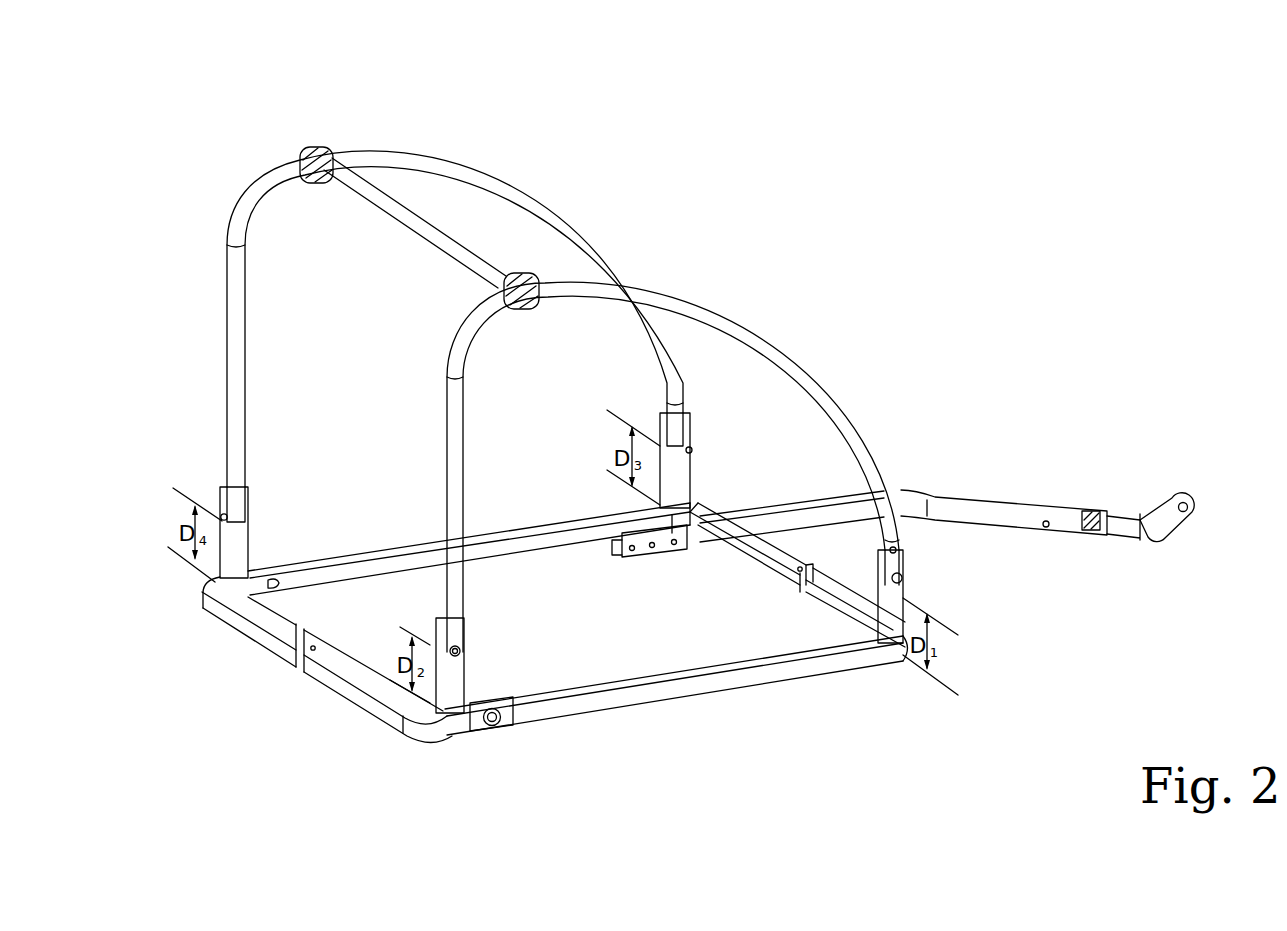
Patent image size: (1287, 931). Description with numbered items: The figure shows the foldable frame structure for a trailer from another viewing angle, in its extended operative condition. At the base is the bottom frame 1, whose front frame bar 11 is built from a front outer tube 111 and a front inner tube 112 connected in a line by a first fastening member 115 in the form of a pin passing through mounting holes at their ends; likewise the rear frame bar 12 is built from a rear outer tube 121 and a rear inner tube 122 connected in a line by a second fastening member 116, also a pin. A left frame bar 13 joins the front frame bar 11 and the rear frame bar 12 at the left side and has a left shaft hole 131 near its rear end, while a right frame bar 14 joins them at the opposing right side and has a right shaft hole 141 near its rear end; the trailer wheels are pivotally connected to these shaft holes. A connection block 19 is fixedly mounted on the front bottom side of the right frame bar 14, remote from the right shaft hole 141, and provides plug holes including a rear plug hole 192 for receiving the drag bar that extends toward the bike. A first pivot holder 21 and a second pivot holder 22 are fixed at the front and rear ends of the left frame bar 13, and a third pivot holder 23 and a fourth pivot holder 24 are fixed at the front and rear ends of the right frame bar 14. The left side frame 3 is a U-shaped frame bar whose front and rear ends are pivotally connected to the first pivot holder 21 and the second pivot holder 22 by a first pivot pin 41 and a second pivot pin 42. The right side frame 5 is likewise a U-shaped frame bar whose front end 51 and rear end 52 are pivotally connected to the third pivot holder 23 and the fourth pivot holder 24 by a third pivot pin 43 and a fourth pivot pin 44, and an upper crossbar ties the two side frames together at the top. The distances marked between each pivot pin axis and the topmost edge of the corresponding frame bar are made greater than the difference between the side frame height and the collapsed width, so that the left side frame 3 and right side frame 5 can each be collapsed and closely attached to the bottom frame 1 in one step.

The bottom frame 1 is at (677, 630).
The left side frame 3 is at (725, 307).
The right side frame 5 is at (452, 156).
The front frame bar 11 is at (789, 575).
The rear frame bar 12 is at (306, 688).
The left frame bar 13 is at (537, 756).
The right frame bar 14 is at (446, 525).
The connection block 19 is at (653, 587).
The first pivot holder 21 is at (952, 587).
The second pivot holder 22 is at (493, 656).
The third pivot holder 23 is at (693, 437).
The fourth pivot holder 24 is at (222, 512).
The first pivot pin 41 is at (905, 548).
The second pivot pin 42 is at (447, 648).
The third pivot pin 43 is at (692, 452).
The fourth pivot pin 44 is at (226, 518).
The front end of right side frame 51 is at (688, 420).
The rear end of right side frame 52 is at (242, 512).
The front outer tube 111 is at (778, 548).
The front inner tube 112 is at (835, 606).
The first fastening member 115 is at (802, 570).
The second fastening member 116 is at (318, 647).
The rear outer tube 121 is at (368, 700).
The rear inner tube 122 is at (243, 625).
The left shaft hole 131 is at (490, 728).
The right shaft hole 141 is at (280, 584).
The rear plug hole 192 is at (630, 550).